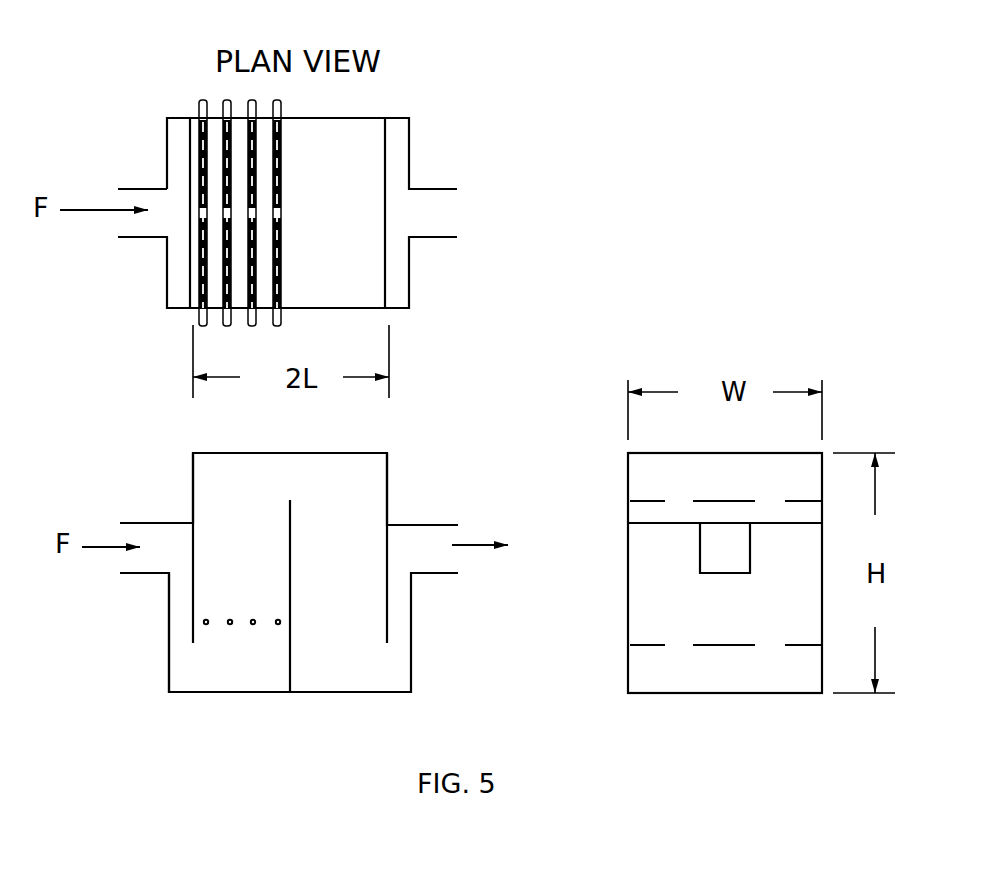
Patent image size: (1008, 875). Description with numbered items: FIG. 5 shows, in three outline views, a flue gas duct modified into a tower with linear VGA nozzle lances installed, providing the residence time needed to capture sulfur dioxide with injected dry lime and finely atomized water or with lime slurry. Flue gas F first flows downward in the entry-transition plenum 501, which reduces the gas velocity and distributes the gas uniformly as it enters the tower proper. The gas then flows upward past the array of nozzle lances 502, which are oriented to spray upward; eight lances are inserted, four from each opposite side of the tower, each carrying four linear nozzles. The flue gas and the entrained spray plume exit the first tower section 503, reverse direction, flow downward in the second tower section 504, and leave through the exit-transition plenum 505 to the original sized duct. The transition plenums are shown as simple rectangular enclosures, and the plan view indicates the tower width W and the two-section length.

The entry-transition plenum 501 is at (182, 617).
The nozzle lances 502 is at (188, 88).
The first tower section 503 is at (230, 523).
The second tower section 504 is at (330, 510).
The exit-transition plenum 505 is at (398, 598).